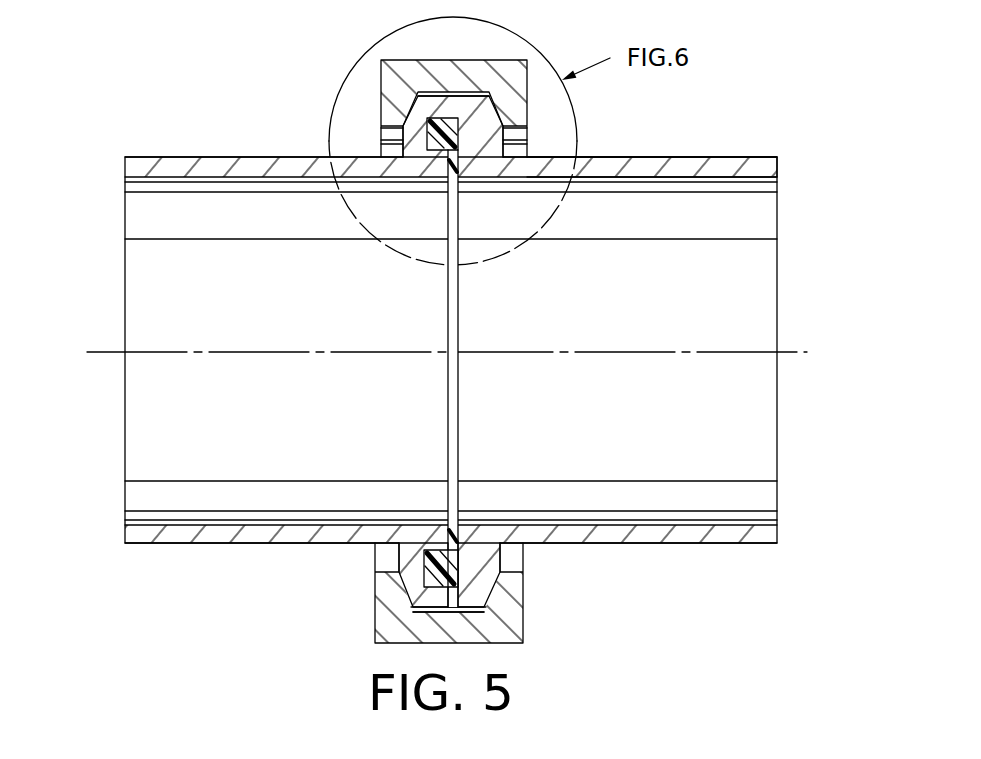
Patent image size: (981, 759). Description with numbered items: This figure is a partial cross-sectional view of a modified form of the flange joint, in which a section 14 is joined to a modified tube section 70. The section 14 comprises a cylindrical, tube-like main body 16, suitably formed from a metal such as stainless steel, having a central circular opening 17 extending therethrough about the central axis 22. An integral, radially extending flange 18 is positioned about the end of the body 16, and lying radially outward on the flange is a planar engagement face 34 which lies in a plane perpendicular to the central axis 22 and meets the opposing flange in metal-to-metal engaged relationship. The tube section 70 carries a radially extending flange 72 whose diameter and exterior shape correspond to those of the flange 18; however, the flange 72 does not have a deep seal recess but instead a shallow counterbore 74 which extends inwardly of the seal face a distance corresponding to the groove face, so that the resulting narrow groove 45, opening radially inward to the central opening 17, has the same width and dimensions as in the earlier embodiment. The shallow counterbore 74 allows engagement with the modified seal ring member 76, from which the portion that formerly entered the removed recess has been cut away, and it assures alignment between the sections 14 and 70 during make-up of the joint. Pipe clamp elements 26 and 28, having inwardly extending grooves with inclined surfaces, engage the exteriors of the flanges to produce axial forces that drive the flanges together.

The section 14 is at (140, 138).
The main body 16 is at (243, 157).
The central circular opening 17 is at (153, 254).
The flange 18 is at (380, 137).
The central axis 22 is at (157, 350).
The pipe clamp element 26 is at (375, 603).
The pipe clamp element 28 is at (380, 78).
The planar engagement face 34 is at (362, 607).
The groove 45 is at (450, 517).
The tube section 70 is at (710, 144).
The flange 72 is at (527, 140).
The shallow counterbore 74 is at (445, 165).
The seal ring member 76 is at (494, 519).